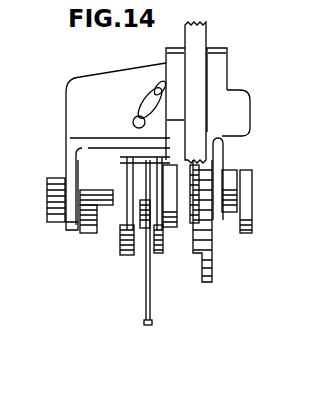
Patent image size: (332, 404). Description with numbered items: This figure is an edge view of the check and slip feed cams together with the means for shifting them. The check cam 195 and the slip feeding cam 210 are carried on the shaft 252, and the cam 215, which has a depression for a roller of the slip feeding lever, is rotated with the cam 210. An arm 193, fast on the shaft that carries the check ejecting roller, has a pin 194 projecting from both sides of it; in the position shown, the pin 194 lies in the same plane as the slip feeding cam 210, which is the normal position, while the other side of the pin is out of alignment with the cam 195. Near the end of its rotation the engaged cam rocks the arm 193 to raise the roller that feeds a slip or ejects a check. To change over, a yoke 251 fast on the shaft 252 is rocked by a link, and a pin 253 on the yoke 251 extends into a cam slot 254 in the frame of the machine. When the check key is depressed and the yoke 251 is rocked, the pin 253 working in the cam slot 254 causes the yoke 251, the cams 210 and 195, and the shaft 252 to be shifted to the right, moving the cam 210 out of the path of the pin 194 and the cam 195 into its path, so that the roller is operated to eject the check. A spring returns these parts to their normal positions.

The arm 193 is at (152, 315).
The pin 194 is at (141, 248).
The cam 195 is at (128, 252).
The cam 210 is at (150, 255).
The cam 215 is at (208, 247).
The yoke 251 is at (113, 162).
The shaft 252 is at (231, 205).
The pin 253 is at (140, 124).
The cam slot 254 is at (157, 90).